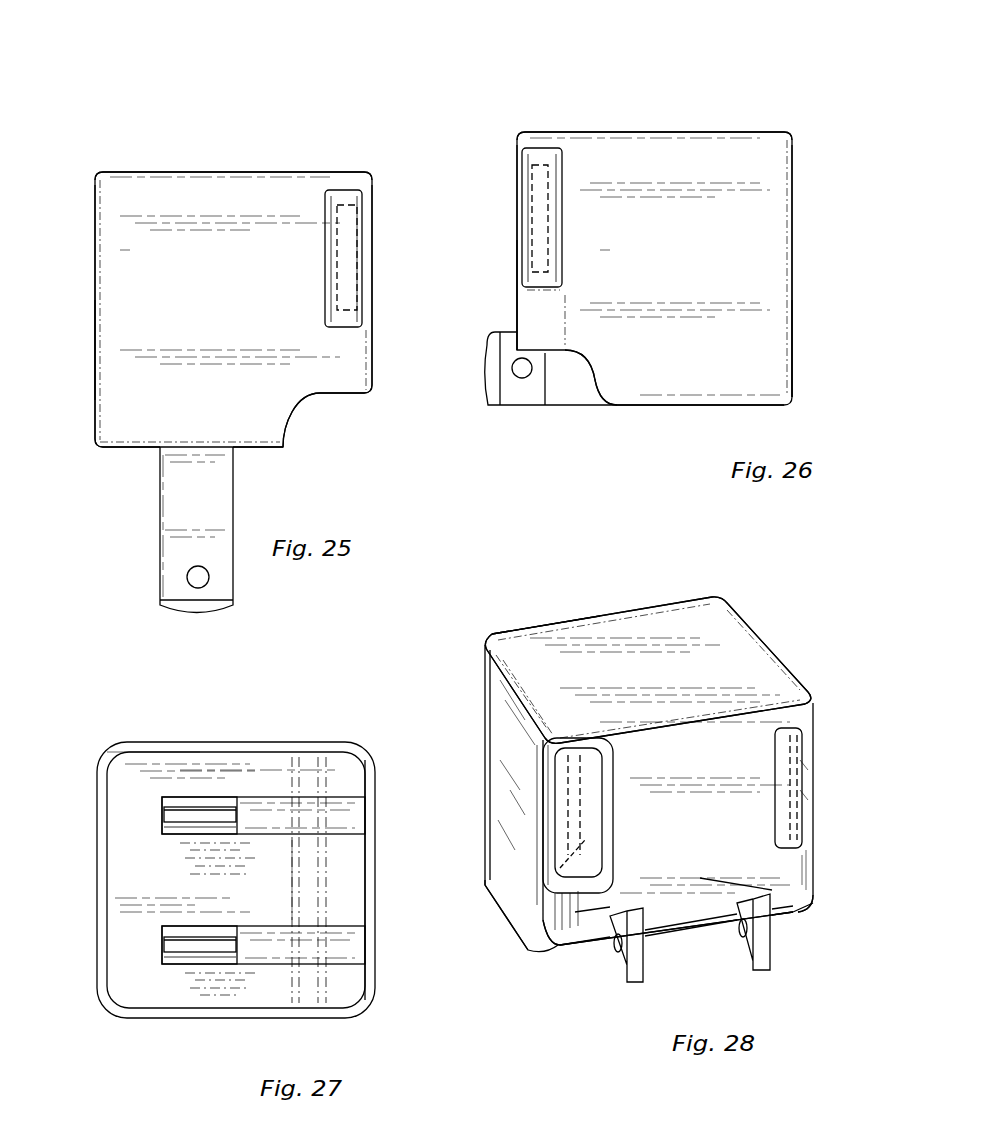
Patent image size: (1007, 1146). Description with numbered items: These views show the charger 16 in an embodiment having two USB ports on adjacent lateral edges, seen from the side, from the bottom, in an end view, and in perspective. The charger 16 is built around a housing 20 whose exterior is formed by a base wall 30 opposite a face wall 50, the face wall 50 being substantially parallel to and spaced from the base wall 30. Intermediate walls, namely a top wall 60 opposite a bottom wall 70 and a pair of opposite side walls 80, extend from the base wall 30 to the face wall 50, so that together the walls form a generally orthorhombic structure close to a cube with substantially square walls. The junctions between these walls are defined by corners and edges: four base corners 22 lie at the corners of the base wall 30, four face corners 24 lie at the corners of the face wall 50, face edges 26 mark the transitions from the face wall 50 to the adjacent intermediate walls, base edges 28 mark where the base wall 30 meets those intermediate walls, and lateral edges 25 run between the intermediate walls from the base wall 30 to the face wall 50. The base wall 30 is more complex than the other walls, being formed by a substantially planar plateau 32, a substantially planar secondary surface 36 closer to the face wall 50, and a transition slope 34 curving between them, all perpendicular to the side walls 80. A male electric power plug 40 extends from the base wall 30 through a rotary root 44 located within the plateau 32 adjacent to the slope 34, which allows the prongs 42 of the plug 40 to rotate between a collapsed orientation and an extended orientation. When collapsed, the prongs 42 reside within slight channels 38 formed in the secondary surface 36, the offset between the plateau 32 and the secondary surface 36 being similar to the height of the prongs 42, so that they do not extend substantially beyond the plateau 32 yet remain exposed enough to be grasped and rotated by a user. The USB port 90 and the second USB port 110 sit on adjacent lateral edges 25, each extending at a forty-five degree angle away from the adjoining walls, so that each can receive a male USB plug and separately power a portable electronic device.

In FIG. 25, the charger 16 is at (248, 153).
In FIG. 26, the charger 16 is at (773, 105).
In FIG. 27, the charger 16 is at (133, 715).
In FIG. 28, the charger 16 is at (677, 595).
In FIG. 25, the housing 20 is at (88, 280).
In FIG. 26, the housing 20 is at (808, 268).
In FIG. 27, the housing 20 is at (80, 845).
In FIG. 28, the housing 20 is at (825, 800).
In FIG. 28, the base corners 22 is at (485, 885).
In FIG. 28, the face corners 24 is at (725, 598).
In FIG. 25, the lateral edges 25 is at (372, 232).
In FIG. 26, the lateral edges 25 is at (517, 232).
In FIG. 27, the lateral edges 25 is at (112, 752).
In FIG. 28, the lateral edges 25 is at (590, 905).
In FIG. 25, the face edges 26 is at (97, 172).
In FIG. 26, the face edges 26 is at (517, 132).
In FIG. 28, the face edges 26 is at (607, 610).
In FIG. 25, the base edges 28 is at (372, 393).
In FIG. 25, the base wall 30 is at (255, 447).
In FIG. 26, the base wall 30 is at (728, 405).
In FIG. 27, the base wall 30 is at (151, 865).
In FIG. 28, the base wall 30 is at (522, 962).
In FIG. 25, the plateau 32 is at (145, 447).
In FIG. 26, the plateau 32 is at (648, 405).
In FIG. 27, the plateau 32 is at (244, 905).
In FIG. 28, the plateau 32 is at (505, 930).
In FIG. 25, the transition slope 34 is at (298, 420).
In FIG. 26, the transition slope 34 is at (597, 383).
In FIG. 27, the transition slope 34 is at (305, 875).
In FIG. 28, the transition slope 34 is at (555, 945).
In FIG. 25, the secondary surface 36 is at (340, 393).
In FIG. 26, the secondary surface 36 is at (545, 355).
In FIG. 27, the secondary surface 36 is at (347, 888).
In FIG. 28, the secondary surface 36 is at (690, 930).
In FIG. 27, the channels 38 is at (340, 815).
In FIG. 28, the channels 38 is at (790, 898).
In FIG. 25, the male electric power plug 40 is at (140, 555).
In FIG. 26, the male electric power plug 40 is at (490, 420).
In FIG. 27, the male electric power plug 40 is at (235, 795).
In FIG. 28, the male electric power plug 40 is at (600, 990).
In FIG. 25, the prongs 42 is at (165, 580).
In FIG. 26, the prongs 42 is at (488, 385).
In FIG. 27, the prongs 42 is at (176, 810).
In FIG. 28, the prongs 42 is at (630, 962).
In FIG. 27, the rotary root 44 is at (165, 828).
In FIG. 25, the face wall 50 is at (197, 172).
In FIG. 26, the face wall 50 is at (628, 132).
In FIG. 28, the face wall 50 is at (611, 677).
In FIG. 25, the top wall 60 is at (364, 252).
In FIG. 26, the top wall 60 is at (793, 325).
In FIG. 27, the top wall 60 is at (375, 912).
In FIG. 28, the top wall 60 is at (713, 780).
In FIG. 25, the bottom wall 70 is at (96, 352).
In FIG. 26, the bottom wall 70 is at (517, 292).
In FIG. 27, the bottom wall 70 is at (97, 937).
In FIG. 28, the bottom wall 70 is at (545, 610).
In FIG. 25, the side walls 80 is at (216, 300).
In FIG. 26, the side walls 80 is at (656, 263).
In FIG. 27, the side walls 80 is at (210, 742).
In FIG. 28, the side walls 80 is at (524, 793).
In FIG. 26, the USB port 90 is at (538, 180).
In FIG. 28, the USB port 90 is at (790, 812).
In FIG. 25, the second USB port 110 is at (345, 265).
In FIG. 28, the second USB port 110 is at (575, 825).